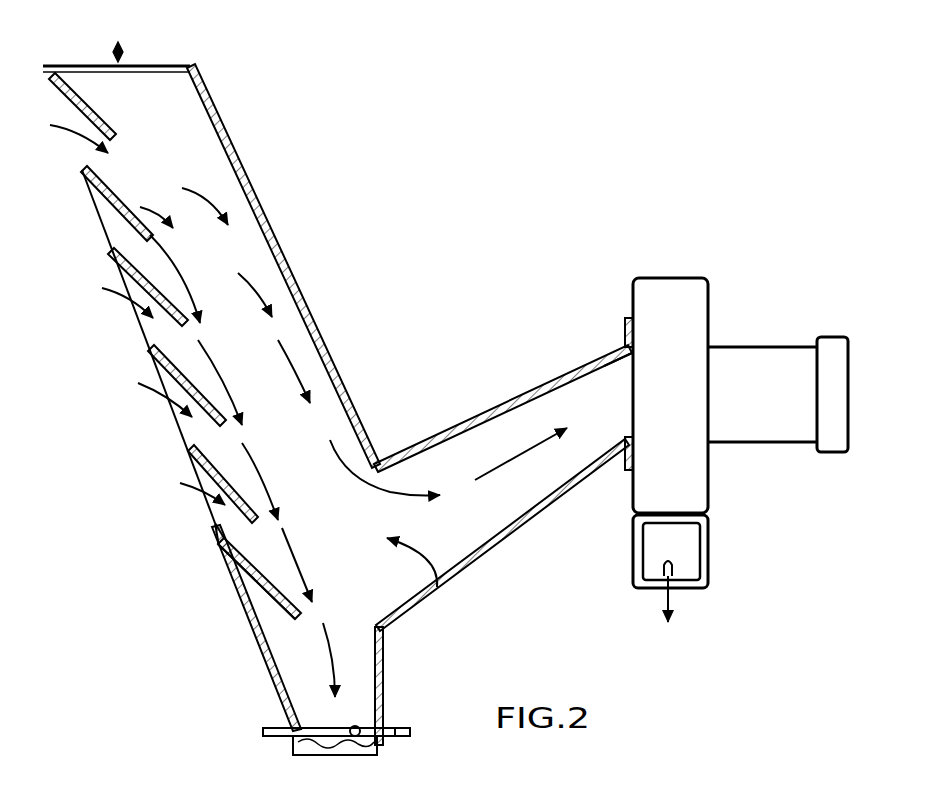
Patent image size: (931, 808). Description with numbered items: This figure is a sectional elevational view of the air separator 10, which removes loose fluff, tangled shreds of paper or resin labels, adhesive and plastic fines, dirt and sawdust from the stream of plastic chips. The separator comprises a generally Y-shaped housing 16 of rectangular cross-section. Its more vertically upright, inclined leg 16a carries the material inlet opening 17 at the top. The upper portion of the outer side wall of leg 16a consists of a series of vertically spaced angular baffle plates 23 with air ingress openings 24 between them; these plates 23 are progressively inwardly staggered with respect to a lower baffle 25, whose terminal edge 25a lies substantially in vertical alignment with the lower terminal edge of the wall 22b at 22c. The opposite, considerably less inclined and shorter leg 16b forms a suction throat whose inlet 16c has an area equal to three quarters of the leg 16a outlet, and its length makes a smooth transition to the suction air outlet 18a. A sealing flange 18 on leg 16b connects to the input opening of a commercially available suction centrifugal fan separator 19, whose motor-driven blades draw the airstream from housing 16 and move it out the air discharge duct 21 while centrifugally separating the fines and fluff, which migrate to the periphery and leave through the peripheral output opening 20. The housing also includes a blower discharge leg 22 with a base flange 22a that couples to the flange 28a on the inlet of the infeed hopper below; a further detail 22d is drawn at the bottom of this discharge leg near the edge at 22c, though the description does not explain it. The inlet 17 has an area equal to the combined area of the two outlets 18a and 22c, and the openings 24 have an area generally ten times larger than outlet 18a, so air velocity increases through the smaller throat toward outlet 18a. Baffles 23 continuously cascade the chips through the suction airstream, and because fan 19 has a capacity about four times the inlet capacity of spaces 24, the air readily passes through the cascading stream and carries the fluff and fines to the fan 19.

The air separator 10 is at (382, 314).
The Y-shaped housing 16 is at (245, 158).
The inclined leg 16a is at (280, 258).
The suction leg 16b is at (485, 412).
The throat area inlet 16c is at (436, 584).
The material inlet opening 17 is at (142, 57).
The sealing flange 18 is at (626, 324).
The suction air outlet 18a is at (628, 382).
The suction centrifugal fan separator 19 is at (665, 288).
The peripheral output opening 20 is at (690, 578).
The air discharge duct 21 is at (767, 363).
The blower discharge leg 22 is at (386, 652).
The base flange 22a is at (390, 729).
The wall 22b is at (278, 700).
The lower terminal edge outlet 22c is at (312, 750).
The drain opening 22d is at (357, 739).
The angular baffle plates 23 is at (168, 370).
The air ingress openings 24 is at (215, 523).
The lower baffle 25 is at (262, 596).
The terminal edge 25a is at (297, 620).
The hopper inlet flange 28a is at (406, 740).